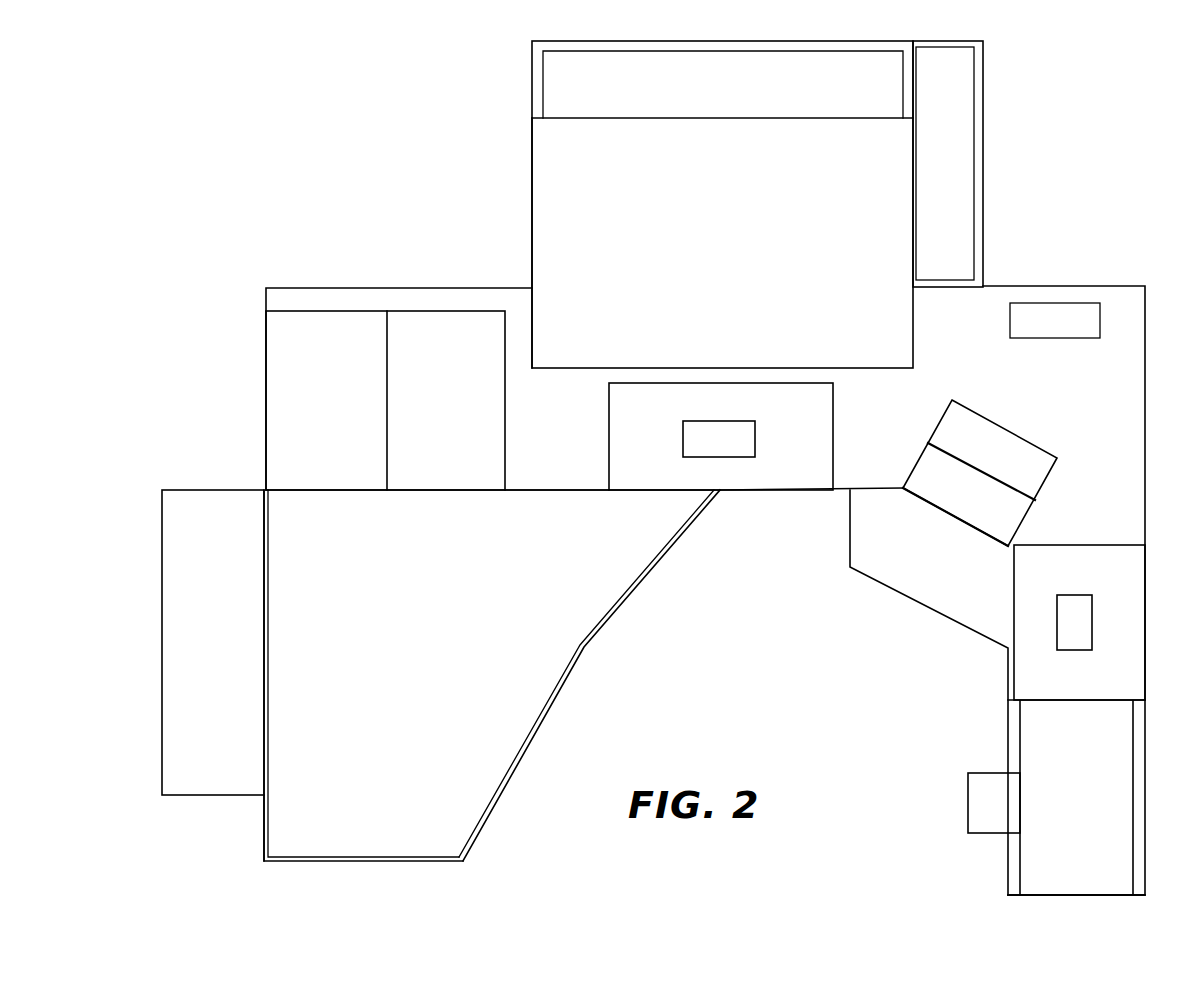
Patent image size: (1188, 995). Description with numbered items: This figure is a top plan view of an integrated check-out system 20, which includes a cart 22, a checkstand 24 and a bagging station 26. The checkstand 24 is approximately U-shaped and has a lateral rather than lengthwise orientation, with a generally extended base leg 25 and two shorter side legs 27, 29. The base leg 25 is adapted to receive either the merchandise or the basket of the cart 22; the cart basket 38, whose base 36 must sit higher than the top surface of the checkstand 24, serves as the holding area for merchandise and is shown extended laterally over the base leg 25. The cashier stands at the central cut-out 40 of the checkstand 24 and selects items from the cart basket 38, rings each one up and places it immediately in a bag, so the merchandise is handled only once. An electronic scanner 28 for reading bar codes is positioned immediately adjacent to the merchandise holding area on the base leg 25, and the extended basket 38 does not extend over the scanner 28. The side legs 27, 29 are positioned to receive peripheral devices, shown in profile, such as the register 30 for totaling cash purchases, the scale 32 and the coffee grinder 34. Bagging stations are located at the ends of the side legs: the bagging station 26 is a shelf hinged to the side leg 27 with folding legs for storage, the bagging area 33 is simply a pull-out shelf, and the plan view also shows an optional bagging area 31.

The integrated check-out system 20 is at (1086, 270).
The cart 22 is at (516, 116).
The checkstand 24 is at (398, 291).
The base leg 25 is at (538, 443).
The bagging station 26 is at (371, 615).
The side leg 27 is at (1110, 908).
The scanner 28 is at (778, 426).
The side leg 29 is at (243, 825).
The register 30 is at (964, 453).
The optional bagging area 31 is at (194, 598).
The scale 32 is at (306, 393).
The bagging area 33 is at (908, 568).
The coffee grinder 34 is at (1071, 581).
The base of the cart basket 36 is at (711, 213).
The cart basket 38 is at (531, 233).
The central cut-out 40 is at (611, 675).